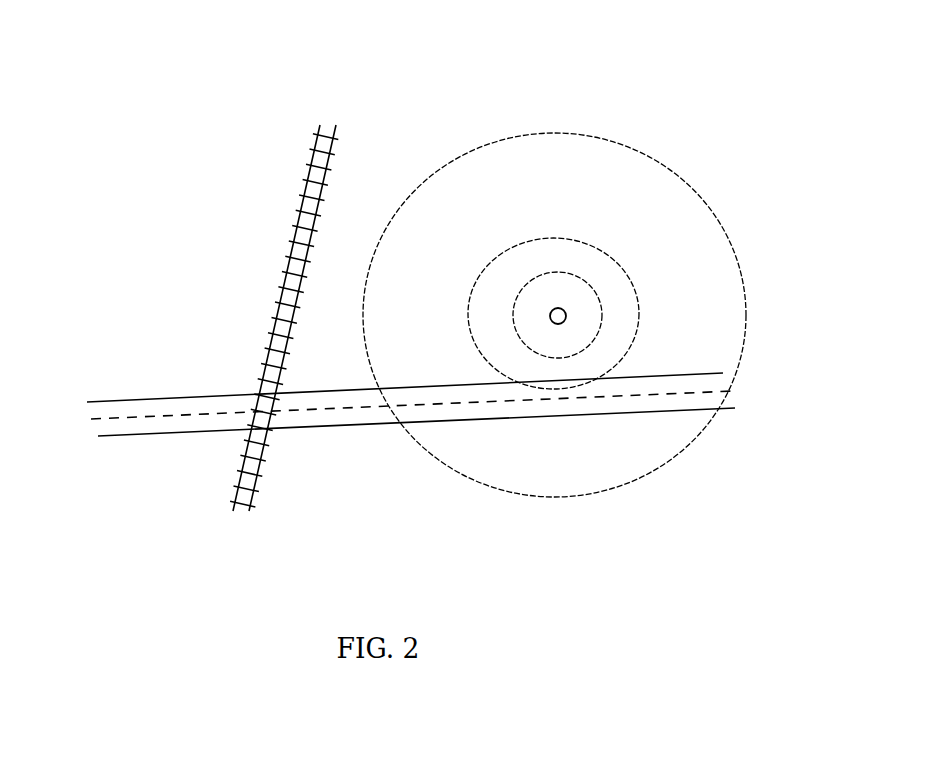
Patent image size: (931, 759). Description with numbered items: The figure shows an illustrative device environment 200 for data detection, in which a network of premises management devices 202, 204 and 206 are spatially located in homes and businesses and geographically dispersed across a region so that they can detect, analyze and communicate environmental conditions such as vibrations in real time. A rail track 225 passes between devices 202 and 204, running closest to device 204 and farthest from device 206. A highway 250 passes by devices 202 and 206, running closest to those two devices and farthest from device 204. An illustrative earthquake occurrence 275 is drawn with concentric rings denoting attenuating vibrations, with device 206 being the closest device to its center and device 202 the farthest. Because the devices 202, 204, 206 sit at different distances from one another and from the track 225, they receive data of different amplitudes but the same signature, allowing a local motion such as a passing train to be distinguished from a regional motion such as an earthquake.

The device environment 200 is at (703, 132).
The device 202 is at (155, 313).
The device 204 is at (553, 315).
The device 206 is at (560, 313).
The rail track 225 is at (307, 208).
The highway 250 is at (357, 422).
The earthquake occurrence 275 is at (566, 315).